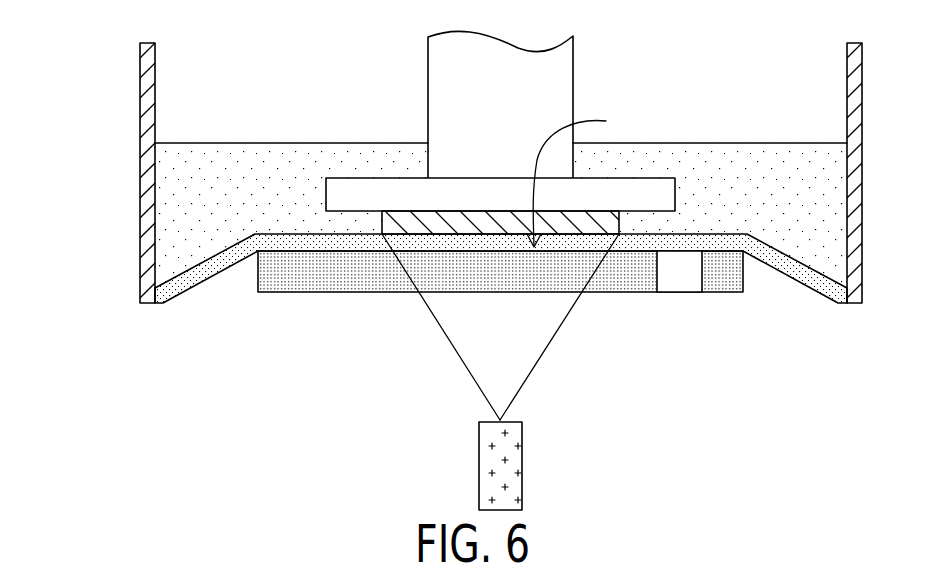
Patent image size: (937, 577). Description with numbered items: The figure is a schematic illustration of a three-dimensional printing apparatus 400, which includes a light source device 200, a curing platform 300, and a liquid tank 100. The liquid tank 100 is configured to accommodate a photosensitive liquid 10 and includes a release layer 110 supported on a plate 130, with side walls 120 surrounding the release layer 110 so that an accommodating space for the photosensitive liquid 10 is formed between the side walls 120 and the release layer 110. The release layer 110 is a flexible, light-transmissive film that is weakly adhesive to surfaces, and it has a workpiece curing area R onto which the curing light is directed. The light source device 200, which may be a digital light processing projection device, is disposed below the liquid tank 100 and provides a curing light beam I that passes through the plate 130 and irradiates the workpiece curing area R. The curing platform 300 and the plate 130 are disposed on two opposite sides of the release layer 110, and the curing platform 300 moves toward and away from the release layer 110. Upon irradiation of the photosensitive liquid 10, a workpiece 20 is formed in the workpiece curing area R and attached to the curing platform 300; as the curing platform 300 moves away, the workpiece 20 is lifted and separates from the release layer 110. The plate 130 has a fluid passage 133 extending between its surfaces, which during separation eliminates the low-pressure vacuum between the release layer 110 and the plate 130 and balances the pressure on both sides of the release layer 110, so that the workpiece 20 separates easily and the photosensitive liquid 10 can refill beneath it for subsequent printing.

The liquid tank 100 is at (76, 82).
The release layer 110 is at (183, 284).
The side walls 120 is at (143, 102).
The plate 130 is at (409, 284).
The fluid passage 133 is at (677, 284).
The photosensitive liquid 10 is at (210, 155).
The workpiece 20 is at (405, 224).
The curing platform 300 is at (637, 200).
The workpiece curing area R is at (575, 177).
The curing light beam I is at (543, 357).
The light source device 200 is at (505, 461).
The three-dimensional printing apparatus 400 is at (830, 457).